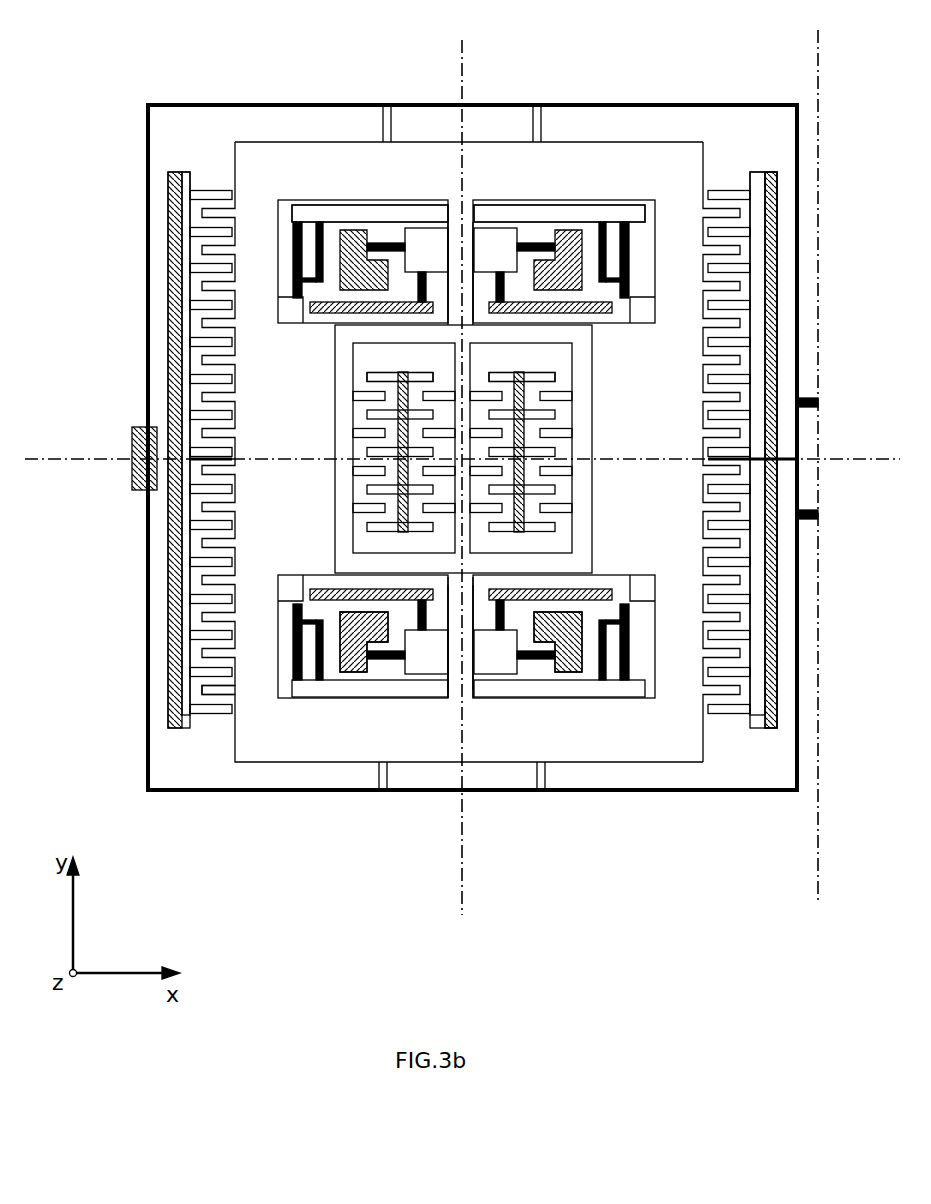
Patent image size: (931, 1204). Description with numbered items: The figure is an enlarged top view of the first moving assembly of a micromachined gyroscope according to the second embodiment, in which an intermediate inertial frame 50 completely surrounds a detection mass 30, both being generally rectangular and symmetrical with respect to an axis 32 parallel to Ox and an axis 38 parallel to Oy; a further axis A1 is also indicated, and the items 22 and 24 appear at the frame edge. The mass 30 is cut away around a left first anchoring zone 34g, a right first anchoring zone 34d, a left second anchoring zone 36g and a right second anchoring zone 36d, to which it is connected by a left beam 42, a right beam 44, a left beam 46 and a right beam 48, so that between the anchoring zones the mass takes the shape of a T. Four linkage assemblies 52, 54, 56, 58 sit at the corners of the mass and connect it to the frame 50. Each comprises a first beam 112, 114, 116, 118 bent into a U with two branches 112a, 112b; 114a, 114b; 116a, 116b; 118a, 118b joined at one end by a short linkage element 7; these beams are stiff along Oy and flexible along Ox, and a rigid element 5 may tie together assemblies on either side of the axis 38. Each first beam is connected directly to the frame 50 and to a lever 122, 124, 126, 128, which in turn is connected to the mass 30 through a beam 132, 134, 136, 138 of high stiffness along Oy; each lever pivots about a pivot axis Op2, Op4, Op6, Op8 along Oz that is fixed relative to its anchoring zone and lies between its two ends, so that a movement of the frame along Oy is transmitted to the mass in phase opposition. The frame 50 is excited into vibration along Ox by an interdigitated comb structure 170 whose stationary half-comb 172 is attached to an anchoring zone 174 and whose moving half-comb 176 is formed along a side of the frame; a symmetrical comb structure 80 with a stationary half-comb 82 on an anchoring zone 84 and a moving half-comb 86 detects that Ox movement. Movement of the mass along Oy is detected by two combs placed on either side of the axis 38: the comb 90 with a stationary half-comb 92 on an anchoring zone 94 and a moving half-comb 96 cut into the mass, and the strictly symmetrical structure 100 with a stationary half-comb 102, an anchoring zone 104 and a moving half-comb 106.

The rigid element 5 is at (473, 213).
The short linkage element 7 is at (302, 262).
The contact pads 22 is at (810, 408).
The anchor 24 is at (132, 455).
The detection mass 30 is at (442, 243).
The axis of symmetry 32 is at (868, 450).
The left first anchoring zone 34g is at (345, 235).
The right first anchoring zone 34d is at (565, 235).
The left second anchoring zone 36g is at (363, 672).
The right second anchoring zone 36d is at (560, 672).
The axis of symmetry 38 is at (463, 882).
The left first beam 42 is at (373, 243).
The right first beam 44 is at (532, 240).
The left second beam 46 is at (375, 668).
The right second beam 48 is at (533, 663).
The intermediate inertial frame 50 is at (625, 152).
The linkage assembly 52 is at (303, 207).
The linkage assembly 54 is at (613, 214).
The linkage assembly 56 is at (327, 699).
The linkage assembly 58 is at (597, 699).
The interdigitated comb structure 80 is at (770, 836).
The stationary half-comb 82 is at (771, 728).
The anchoring zone 84 is at (777, 190).
The moving half-comb 86 is at (722, 710).
The interdigitated comb 90 is at (335, 400).
The stationary half-comb 92 is at (363, 400).
The anchoring zone 94 is at (400, 530).
The moving half-comb 96 is at (377, 382).
The interdigitated structure 100 is at (592, 400).
The stationary half-comb 102 is at (560, 400).
The anchoring zone 104 is at (524, 530).
The moving half-comb 106 is at (545, 382).
The first beam 112 is at (225, 268).
The branch 112a is at (310, 222).
The branch 112b is at (316, 280).
The first beam 114 is at (708, 265).
The branch 114a is at (622, 228).
The branch 114b is at (606, 282).
The first beam 116 is at (230, 678).
The branch 116a is at (310, 680).
The branch 116b is at (310, 675).
The first beam 118 is at (738, 678).
The branch 118a is at (622, 680).
The branch 118b is at (606, 675).
The lever 122 is at (333, 313).
The lever 124 is at (590, 313).
The lever 126 is at (330, 594).
The lever 128 is at (595, 594).
The beam 132 is at (405, 313).
The beam 134 is at (525, 313).
The beam 136 is at (440, 640).
The beam 138 is at (480, 620).
The interdigitated comb structure 170 is at (293, 836).
The stationary half-comb 172 is at (202, 707).
The anchoring zone 174 is at (172, 190).
The moving half-comb 176 is at (215, 695).
The axis A1 is at (824, 452).
The pivot axis Op2 is at (303, 206).
The pivot axis Op4 is at (617, 213).
The pivot axis Op6 is at (335, 614).
The pivot axis Op8 is at (588, 614).